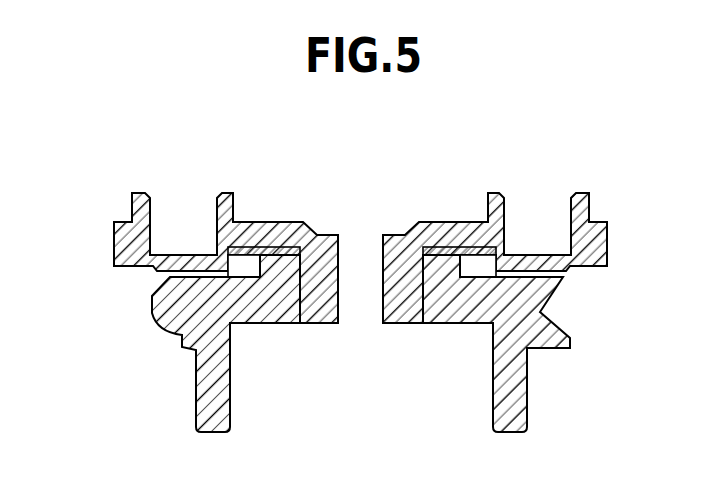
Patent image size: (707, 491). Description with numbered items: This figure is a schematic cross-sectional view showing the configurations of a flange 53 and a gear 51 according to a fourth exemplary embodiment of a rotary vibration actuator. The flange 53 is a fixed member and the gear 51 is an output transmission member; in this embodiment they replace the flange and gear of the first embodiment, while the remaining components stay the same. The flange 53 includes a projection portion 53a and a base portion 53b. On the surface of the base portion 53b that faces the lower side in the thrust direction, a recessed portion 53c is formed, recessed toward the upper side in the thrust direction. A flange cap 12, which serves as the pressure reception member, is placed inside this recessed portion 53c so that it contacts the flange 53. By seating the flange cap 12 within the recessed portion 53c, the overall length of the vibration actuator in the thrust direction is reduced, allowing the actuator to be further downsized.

The flange cap 12 is at (477, 258).
The gear 51 is at (524, 404).
The flange 53 is at (607, 234).
The projection portion 53a is at (321, 325).
The base portion 53b is at (114, 240).
The recessed portion 53c is at (283, 247).